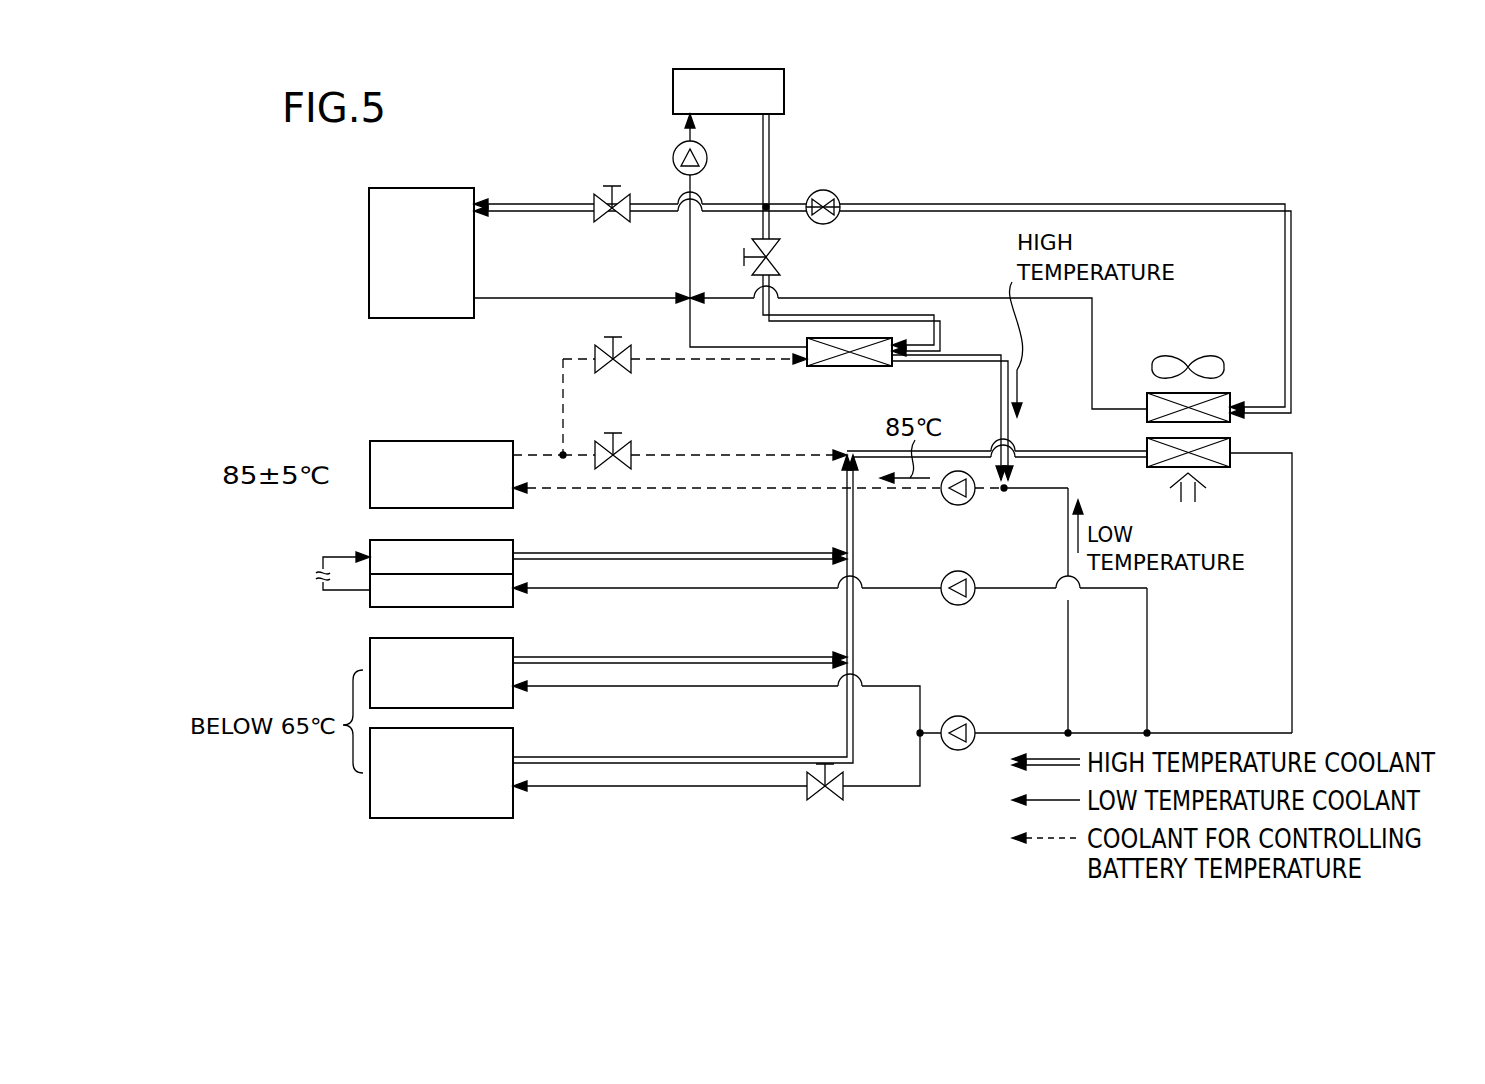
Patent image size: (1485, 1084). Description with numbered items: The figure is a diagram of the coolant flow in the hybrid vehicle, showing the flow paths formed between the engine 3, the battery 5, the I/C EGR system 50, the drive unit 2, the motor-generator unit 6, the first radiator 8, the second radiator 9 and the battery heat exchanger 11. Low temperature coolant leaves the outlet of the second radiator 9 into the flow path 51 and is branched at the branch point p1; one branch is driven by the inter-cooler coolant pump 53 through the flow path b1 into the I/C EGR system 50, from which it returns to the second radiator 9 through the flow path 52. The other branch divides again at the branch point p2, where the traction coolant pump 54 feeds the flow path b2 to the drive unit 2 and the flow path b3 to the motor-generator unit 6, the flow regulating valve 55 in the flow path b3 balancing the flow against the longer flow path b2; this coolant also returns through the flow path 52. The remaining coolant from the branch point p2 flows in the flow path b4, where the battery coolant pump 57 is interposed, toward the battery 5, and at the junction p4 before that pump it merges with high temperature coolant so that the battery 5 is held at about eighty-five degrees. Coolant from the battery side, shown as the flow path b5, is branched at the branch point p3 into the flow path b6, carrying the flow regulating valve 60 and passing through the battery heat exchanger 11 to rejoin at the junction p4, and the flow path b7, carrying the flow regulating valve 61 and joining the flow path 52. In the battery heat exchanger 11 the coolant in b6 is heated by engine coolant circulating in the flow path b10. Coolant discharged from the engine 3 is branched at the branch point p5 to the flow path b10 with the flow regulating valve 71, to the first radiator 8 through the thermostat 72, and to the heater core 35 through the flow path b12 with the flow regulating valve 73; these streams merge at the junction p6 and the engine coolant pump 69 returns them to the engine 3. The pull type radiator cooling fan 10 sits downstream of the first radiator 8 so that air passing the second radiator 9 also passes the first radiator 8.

The engine 3 is at (784, 92).
The heater core 35 is at (368, 232).
The engine coolant pump 69 is at (676, 147).
The flow regulating valve 73 is at (607, 186).
The thermostat 72 is at (834, 196).
The flow regulating valve 71 is at (780, 256).
The battery heat exchanger 11 is at (850, 368).
The flow regulating valve 60 is at (600, 346).
The flow regulating valve 61 is at (625, 442).
The battery 5 is at (368, 452).
The I/C EGR system 50 is at (372, 540).
The drive unit 2 is at (368, 658).
The motor-generator unit 6 is at (368, 800).
The radiator cooling fan 10 is at (1200, 358).
The first radiator 8 is at (1233, 418).
The second radiator 9 is at (1230, 467).
The flow path 52 is at (1100, 450).
The battery coolant pump 57 is at (968, 502).
The inter-cooler coolant pump 53 is at (975, 582).
The traction coolant pump 54 is at (975, 723).
The flow regulating valve 55 is at (821, 802).
The flow path 51 is at (1293, 642).
The flow path b1 is at (1062, 203).
The flow path b12 is at (538, 203).
The flow path b10 is at (896, 314).
The flow path b6 is at (561, 382).
The pipe b5 is at (512, 450).
The flow path b7 is at (708, 454).
The flow path b2 is at (888, 684).
The flow path b3 is at (888, 800).
The flow path b4 is at (1069, 650).
The branch point p1 is at (1150, 731).
The branch point p2 is at (1070, 731).
The branch point p3 is at (561, 453).
The junction p4 is at (1012, 486).
The branch point p5 is at (763, 204).
The junction p6 is at (690, 297).